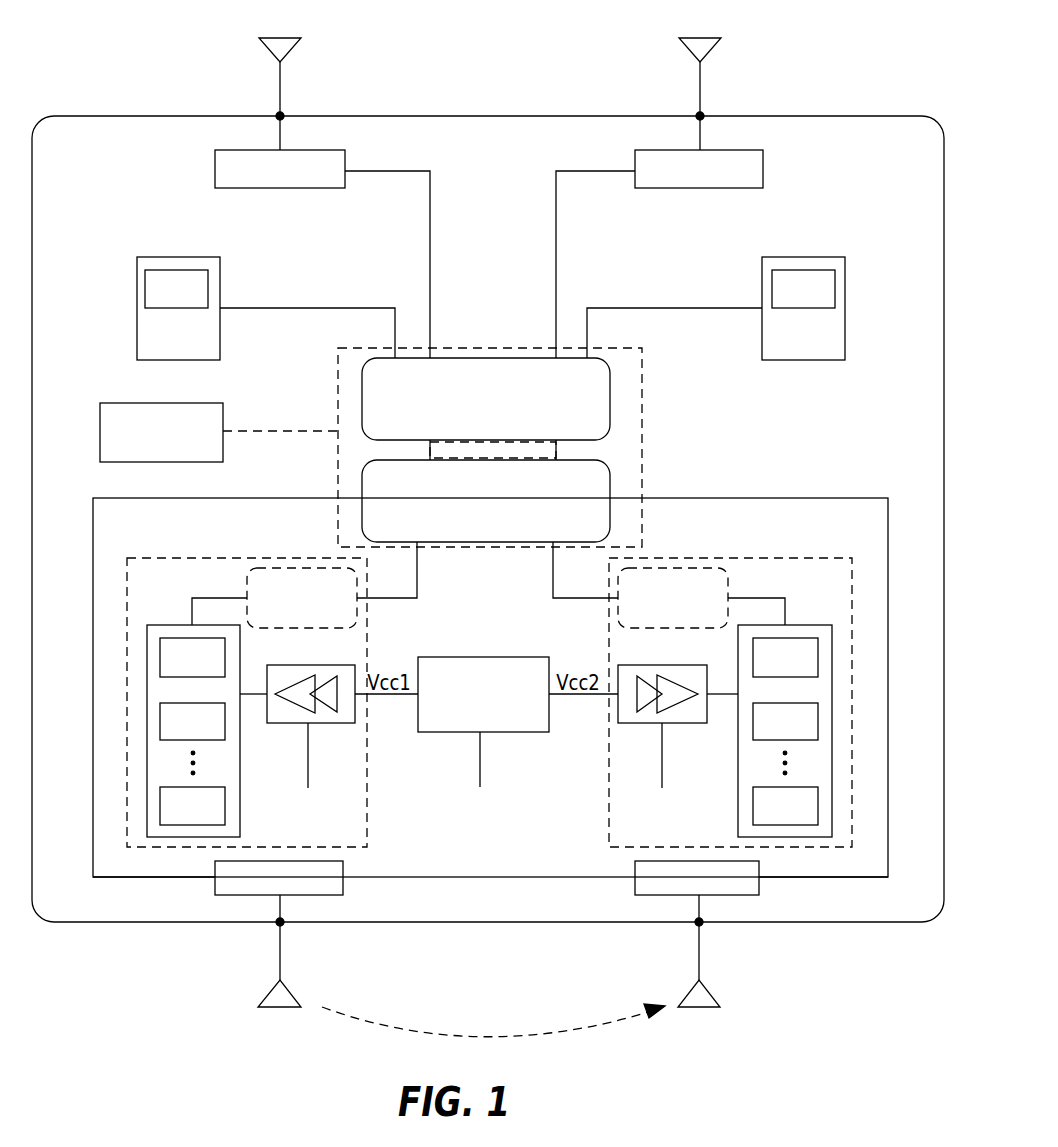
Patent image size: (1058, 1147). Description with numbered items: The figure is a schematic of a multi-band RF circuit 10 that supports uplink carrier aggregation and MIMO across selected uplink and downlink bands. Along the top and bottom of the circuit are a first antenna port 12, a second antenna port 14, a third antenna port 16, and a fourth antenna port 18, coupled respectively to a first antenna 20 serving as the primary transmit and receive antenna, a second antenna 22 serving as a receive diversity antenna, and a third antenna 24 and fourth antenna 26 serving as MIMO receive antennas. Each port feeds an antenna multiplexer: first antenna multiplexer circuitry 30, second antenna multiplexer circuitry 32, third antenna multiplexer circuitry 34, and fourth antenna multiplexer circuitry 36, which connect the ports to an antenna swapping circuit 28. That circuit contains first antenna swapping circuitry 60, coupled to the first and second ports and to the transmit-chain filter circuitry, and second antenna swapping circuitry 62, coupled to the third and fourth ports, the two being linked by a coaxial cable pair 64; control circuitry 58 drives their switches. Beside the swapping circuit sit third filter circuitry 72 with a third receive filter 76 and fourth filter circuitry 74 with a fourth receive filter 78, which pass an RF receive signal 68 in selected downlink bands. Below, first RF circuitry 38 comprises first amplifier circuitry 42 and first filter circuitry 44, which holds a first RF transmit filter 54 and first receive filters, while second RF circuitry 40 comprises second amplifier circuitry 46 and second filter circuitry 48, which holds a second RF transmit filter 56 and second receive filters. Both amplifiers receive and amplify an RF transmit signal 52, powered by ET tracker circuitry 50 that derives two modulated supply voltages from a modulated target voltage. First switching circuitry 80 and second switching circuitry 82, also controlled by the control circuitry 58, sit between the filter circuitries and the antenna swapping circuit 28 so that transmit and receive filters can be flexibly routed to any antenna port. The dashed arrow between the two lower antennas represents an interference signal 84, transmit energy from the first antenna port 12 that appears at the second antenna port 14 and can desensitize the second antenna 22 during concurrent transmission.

The multi-band RF circuit 10 is at (457, 902).
The first antenna port 12 is at (283, 925).
The second antenna port 14 is at (702, 925).
The third antenna port 16 is at (702, 114).
The fourth antenna port 18 is at (282, 114).
The first antenna 20 is at (283, 1008).
The second antenna 22 is at (702, 1008).
The third antenna 24 is at (704, 37).
The fourth antenna 26 is at (284, 37).
The antenna swapping circuit 28 is at (642, 382).
The first antenna multiplexer circuitry 30 is at (268, 892).
The second antenna multiplexer circuitry 32 is at (686, 892).
The third antenna multiplexer circuitry 34 is at (688, 182).
The fourth antenna multiplexer circuitry 36 is at (269, 182).
The first RF circuitry 38 is at (319, 839).
The second RF circuitry 40 is at (619, 839).
The first amplifier circuitry 42 is at (300, 665).
The first filter circuitry 44 is at (162, 625).
The second amplifier circuitry 46 is at (635, 665).
The second filter circuitry 48 is at (808, 625).
The ET tracker circuitry 50 is at (458, 657).
The RF transmit signal 52 is at (308, 757).
The first RF transmit filter 54 is at (182, 671).
The second RF transmit filter 56 is at (774, 671).
The control circuitry 58 is at (150, 446).
The first antenna swapping circuitry 60 is at (475, 538).
The second antenna swapping circuitry 62 is at (475, 436).
The coaxial cable pair 64 is at (560, 452).
The RF receive signal 68 is at (417, 570).
The third filter circuitry 72 is at (800, 257).
The fourth filter circuitry 74 is at (175, 257).
The third receive filter 76 is at (792, 302).
The fourth receive filter 78 is at (166, 302).
The first switching circuitry 80 is at (282, 568).
The second switching circuitry 82 is at (808, 568).
The interference signal 84 is at (699, 957).